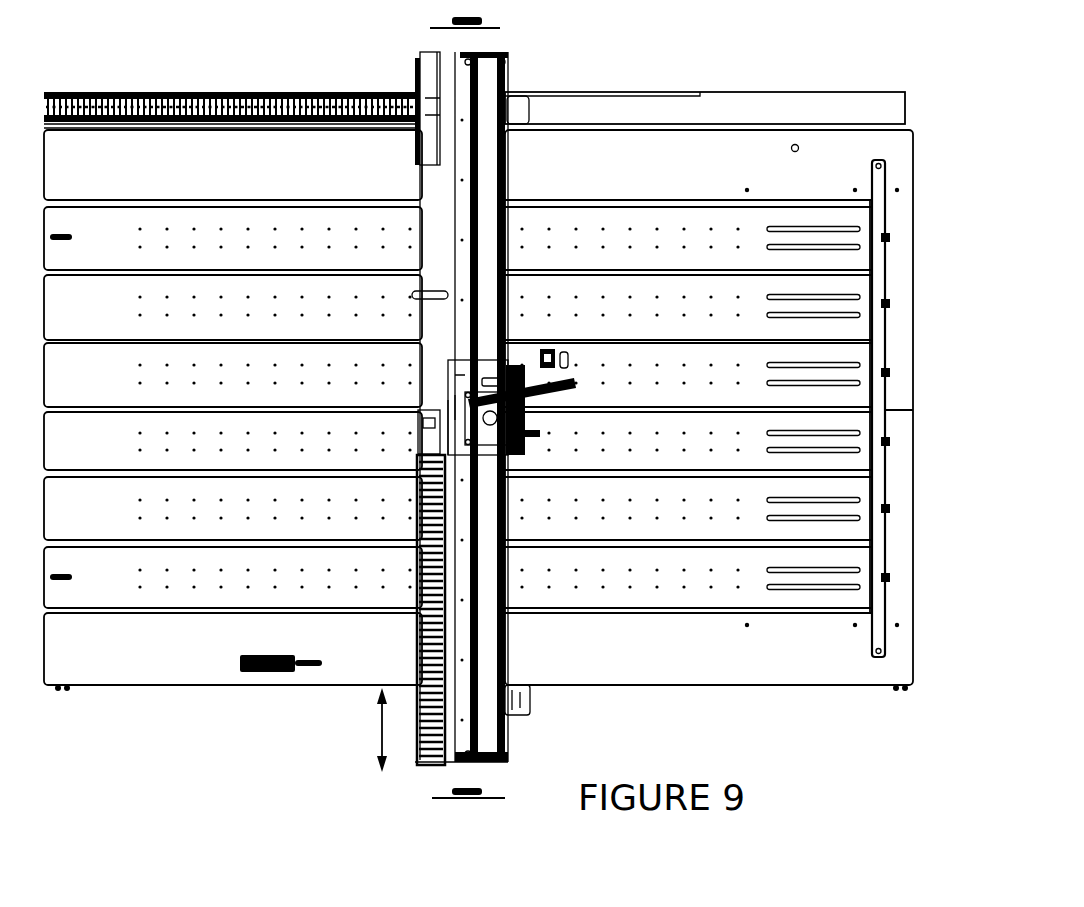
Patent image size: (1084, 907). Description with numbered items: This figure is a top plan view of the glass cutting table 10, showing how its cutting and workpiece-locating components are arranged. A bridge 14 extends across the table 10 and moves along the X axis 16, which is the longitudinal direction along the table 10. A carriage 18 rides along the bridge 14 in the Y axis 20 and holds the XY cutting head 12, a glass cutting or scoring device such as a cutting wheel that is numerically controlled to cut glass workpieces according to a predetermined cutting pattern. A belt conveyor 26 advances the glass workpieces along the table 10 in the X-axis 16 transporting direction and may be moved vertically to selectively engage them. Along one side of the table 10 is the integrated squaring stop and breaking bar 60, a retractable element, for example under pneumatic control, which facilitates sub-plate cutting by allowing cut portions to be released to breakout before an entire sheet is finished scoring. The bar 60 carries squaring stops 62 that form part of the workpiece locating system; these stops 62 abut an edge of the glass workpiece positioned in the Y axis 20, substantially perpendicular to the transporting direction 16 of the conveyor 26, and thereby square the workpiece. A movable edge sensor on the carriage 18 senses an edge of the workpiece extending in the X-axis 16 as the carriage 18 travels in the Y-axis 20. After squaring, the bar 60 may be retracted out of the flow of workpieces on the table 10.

The cutting table 10 is at (170, 780).
The XY cutting head 12 is at (508, 450).
The bridge 14 is at (488, 645).
The X axis 16 is at (478, 800).
The carriage 18 is at (497, 363).
The Y axis 20 is at (378, 735).
The belt conveyor 26 is at (300, 196).
The integrated squaring stop and breaking bar 60 is at (870, 165).
The squaring stops 62 is at (890, 577).